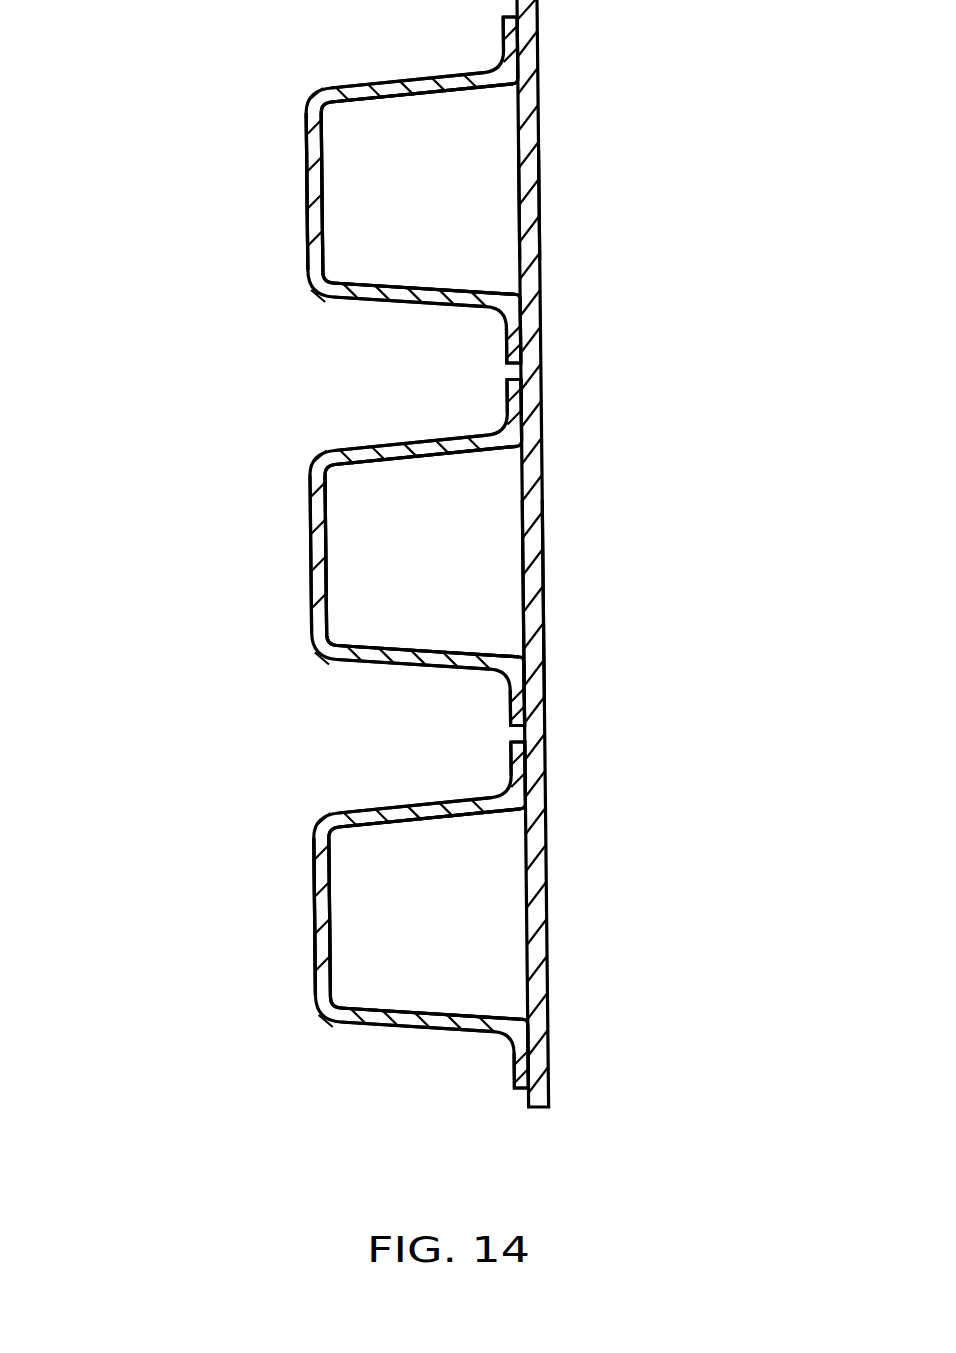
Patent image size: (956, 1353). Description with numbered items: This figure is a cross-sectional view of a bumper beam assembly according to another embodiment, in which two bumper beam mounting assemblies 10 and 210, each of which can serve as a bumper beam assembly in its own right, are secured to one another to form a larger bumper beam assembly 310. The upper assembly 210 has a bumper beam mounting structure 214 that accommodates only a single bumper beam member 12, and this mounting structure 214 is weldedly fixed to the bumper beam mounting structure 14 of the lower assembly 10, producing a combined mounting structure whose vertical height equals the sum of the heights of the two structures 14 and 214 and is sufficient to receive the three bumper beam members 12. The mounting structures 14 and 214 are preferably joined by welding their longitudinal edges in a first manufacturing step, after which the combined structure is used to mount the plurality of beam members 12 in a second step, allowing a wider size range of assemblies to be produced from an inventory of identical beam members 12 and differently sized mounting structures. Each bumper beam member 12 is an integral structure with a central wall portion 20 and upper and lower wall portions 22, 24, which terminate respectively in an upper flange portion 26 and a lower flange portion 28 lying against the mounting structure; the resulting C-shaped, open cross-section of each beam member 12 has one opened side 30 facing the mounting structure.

The bumper beam assembly 10 is at (172, 747).
The bumper beam member 12 is at (290, 230).
The bumper beam mounting structure 14 is at (538, 888).
The central wall portion 20 is at (306, 145).
The upper wall portion 22 is at (377, 90).
The lower wall portion 24 is at (373, 293).
The upper flange portion 26 is at (516, 40).
The lower flange portion 28 is at (510, 342).
The opened side 30 is at (476, 135).
The bumper beam mounting assembly 210 is at (256, 299).
The bumper beam mounting structure 214 is at (533, 224).
The bumper beam assembly 310 is at (604, 602).